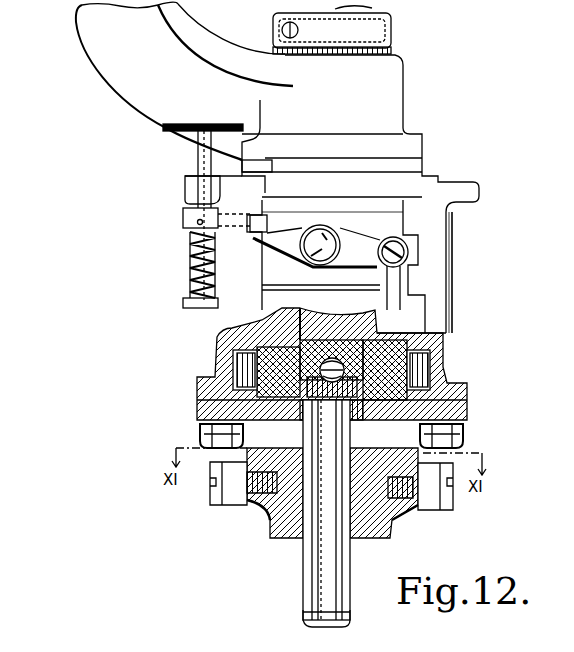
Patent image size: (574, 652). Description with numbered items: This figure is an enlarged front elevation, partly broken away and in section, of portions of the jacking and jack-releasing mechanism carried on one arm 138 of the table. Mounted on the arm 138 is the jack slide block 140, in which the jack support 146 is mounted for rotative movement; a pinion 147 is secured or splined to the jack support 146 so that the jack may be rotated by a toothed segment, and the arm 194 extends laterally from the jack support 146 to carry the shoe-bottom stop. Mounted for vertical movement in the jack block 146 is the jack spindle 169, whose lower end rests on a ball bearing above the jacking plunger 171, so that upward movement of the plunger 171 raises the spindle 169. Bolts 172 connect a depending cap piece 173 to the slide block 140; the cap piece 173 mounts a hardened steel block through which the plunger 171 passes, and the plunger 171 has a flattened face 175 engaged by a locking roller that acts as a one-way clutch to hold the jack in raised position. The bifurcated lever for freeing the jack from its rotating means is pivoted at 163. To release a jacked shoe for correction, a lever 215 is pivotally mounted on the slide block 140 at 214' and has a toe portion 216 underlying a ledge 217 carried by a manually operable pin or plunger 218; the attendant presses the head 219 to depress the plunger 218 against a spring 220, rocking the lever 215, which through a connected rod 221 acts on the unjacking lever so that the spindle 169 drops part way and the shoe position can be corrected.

The arm 194 is at (114, 58).
The head 219 is at (184, 124).
The pin or plunger 218 is at (198, 160).
The ledge 217 is at (183, 218).
The spring 220 is at (206, 246).
The toe portion 216 is at (212, 252).
The jack spindle 169 is at (372, 8).
The jack support 146 is at (400, 96).
The jack slide block 140 is at (360, 213).
The pivot 214' is at (395, 216).
The arm 138 is at (440, 238).
The lever 215 is at (360, 254).
The rod 221 is at (453, 318).
The pivot 163 is at (312, 321).
The pinion 147 is at (257, 363).
The bolts 172 is at (220, 437).
The cap piece 173 is at (263, 510).
The jacking plunger 171 is at (310, 563).
The flattened face 175 is at (350, 616).